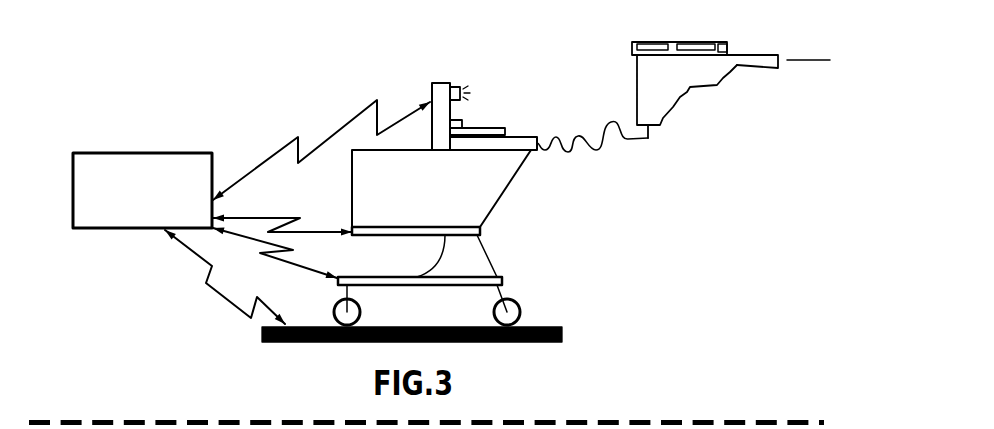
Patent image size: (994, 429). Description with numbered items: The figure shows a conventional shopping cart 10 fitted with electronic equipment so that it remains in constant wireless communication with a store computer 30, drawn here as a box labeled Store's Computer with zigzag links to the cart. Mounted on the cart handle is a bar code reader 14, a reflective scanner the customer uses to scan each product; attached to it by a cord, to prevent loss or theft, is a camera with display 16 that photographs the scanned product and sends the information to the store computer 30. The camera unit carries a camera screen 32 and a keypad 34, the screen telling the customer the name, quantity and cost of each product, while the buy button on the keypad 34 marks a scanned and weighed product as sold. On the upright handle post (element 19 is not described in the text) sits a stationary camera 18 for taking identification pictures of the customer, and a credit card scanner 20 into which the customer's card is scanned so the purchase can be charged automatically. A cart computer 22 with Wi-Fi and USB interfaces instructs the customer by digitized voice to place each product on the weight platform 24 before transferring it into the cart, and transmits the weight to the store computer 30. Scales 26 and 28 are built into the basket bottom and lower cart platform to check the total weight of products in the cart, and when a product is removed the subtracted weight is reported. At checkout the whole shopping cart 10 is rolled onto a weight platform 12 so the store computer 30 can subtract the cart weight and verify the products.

The shopping cart 10 is at (138, 285).
The weight platform 12 is at (547, 327).
The bar code reader 14 is at (737, 65).
The camera with display 16 is at (727, 43).
The stationary camera 18 is at (455, 86).
The cart handle post 19 is at (440, 95).
The credit card scanner 20 is at (462, 120).
The cart computer 22 is at (510, 143).
The weight platform 24 is at (497, 128).
The scale 26 is at (480, 232).
The scale 28 is at (502, 281).
The store computer 30 is at (90, 175).
The camera screen 32 is at (695, 47).
The keypad 34 is at (647, 47).